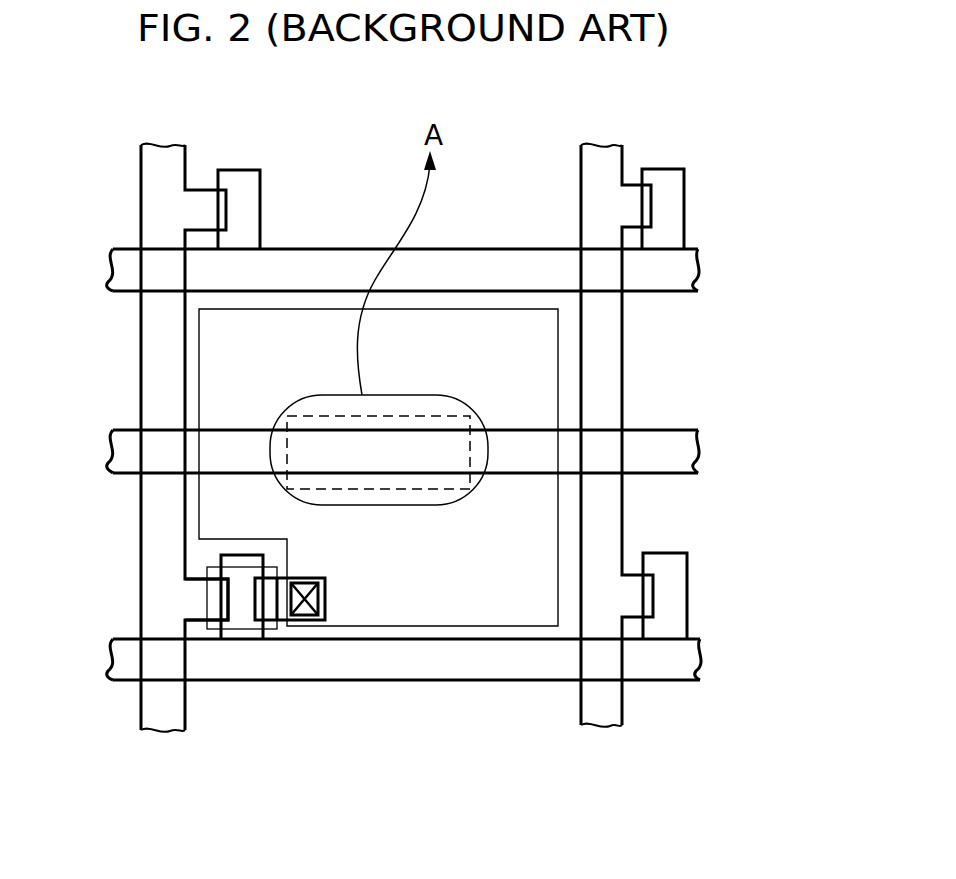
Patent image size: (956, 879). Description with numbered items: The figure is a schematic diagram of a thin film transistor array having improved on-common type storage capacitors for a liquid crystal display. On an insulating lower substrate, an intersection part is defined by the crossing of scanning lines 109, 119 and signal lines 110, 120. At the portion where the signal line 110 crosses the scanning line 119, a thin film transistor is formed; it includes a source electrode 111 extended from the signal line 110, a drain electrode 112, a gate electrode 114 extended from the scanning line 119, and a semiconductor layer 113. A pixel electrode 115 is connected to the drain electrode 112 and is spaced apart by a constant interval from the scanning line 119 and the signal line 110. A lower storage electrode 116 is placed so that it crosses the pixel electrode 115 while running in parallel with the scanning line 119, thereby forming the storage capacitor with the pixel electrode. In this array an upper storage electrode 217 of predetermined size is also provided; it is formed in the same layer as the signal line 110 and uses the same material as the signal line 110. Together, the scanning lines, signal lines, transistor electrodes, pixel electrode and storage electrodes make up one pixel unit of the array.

The scanning line 109 is at (678, 267).
The signal line 110 is at (163, 715).
The source electrode 111 is at (227, 620).
The drain electrode 112 is at (272, 612).
The semiconductor layer 113 is at (207, 571).
The gate electrode 114 is at (233, 560).
The pixel electrode 115 is at (550, 385).
The lower storage electrode 116 is at (678, 452).
The scanning line 119 is at (668, 657).
The signal line 120 is at (600, 718).
The upper storage electrode 217 is at (413, 492).